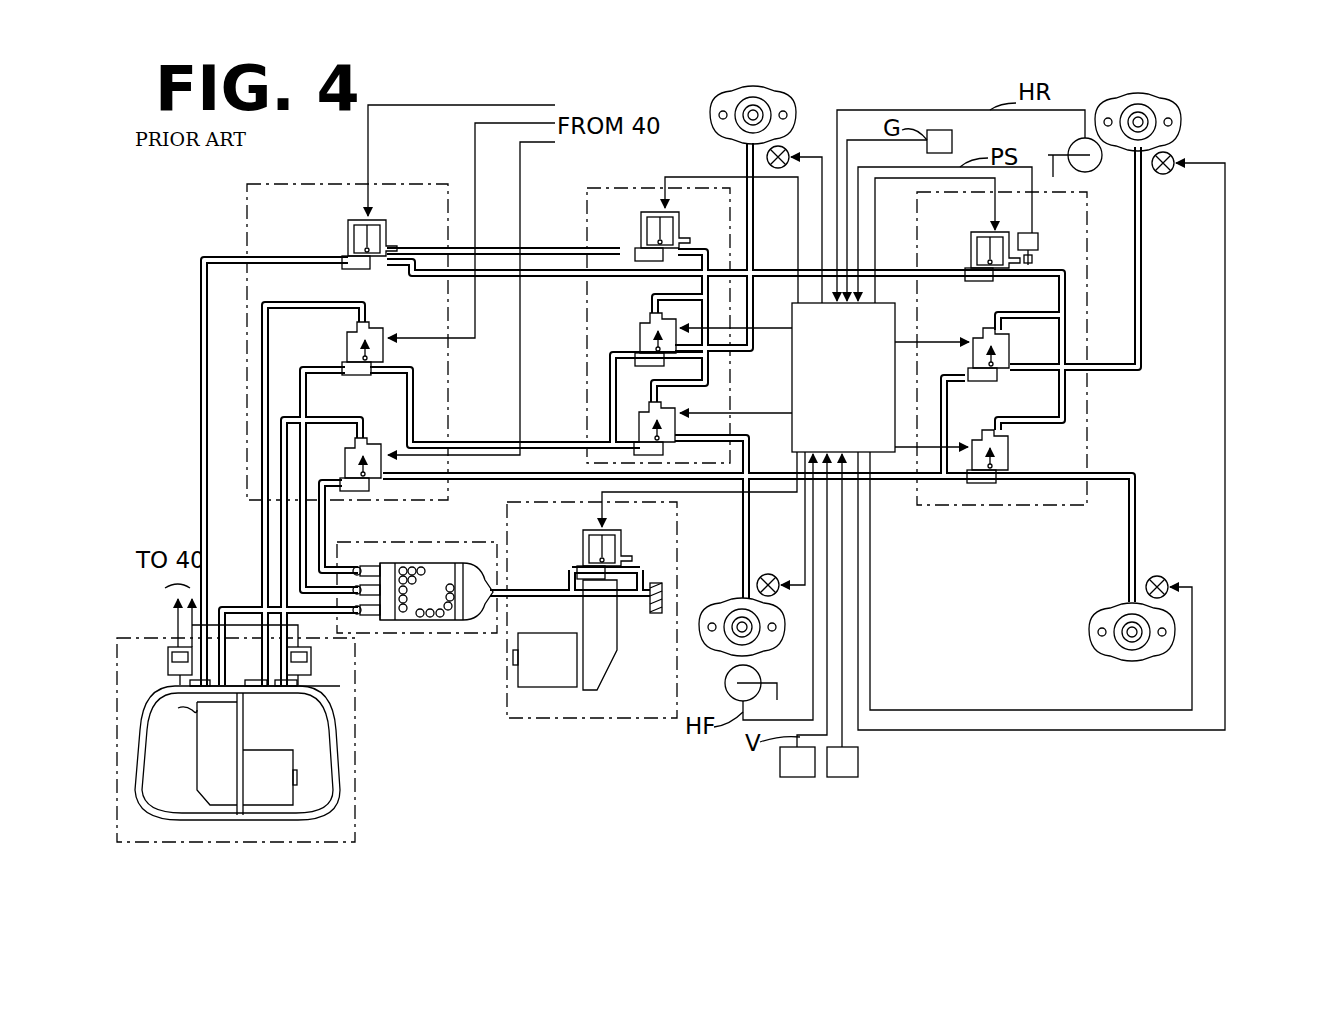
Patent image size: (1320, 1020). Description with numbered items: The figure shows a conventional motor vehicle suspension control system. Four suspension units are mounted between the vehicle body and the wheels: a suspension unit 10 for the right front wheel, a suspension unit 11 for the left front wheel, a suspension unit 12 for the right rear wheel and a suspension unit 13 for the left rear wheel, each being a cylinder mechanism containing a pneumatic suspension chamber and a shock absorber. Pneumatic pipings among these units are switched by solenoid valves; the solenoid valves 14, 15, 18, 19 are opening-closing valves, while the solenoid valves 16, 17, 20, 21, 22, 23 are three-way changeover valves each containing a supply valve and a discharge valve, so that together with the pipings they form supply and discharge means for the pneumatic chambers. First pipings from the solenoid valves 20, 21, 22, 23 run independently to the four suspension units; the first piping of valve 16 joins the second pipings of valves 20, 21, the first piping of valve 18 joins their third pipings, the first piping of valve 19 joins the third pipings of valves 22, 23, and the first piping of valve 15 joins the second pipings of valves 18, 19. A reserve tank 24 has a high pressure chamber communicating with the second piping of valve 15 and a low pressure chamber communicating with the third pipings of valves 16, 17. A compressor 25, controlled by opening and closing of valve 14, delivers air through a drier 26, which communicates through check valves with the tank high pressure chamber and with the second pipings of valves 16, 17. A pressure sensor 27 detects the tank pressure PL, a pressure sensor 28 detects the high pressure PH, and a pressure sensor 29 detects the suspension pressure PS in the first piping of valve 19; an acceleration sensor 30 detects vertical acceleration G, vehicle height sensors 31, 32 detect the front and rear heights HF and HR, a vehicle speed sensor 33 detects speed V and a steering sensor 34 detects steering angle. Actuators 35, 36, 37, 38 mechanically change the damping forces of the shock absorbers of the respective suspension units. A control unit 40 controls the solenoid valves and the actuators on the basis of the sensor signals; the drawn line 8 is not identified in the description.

The signal line 8 is at (858, 692).
The suspension unit 10 is at (785, 100).
The suspension unit 11 is at (710, 612).
The suspension unit 12 is at (1163, 100).
The suspension unit 13 is at (1095, 610).
The solenoid valve 14 is at (621, 548).
The solenoid valve 15 is at (386, 232).
The solenoid valve 16 is at (384, 330).
The solenoid valve 17 is at (380, 442).
The solenoid valve 18 is at (641, 230).
The solenoid valve 19 is at (971, 258).
The solenoid valve 20 is at (640, 328).
The solenoid valve 21 is at (640, 418).
The solenoid valve 22 is at (973, 333).
The solenoid valve 23 is at (974, 445).
The reserve tank 24 is at (250, 820).
The compressor 25 is at (585, 687).
The drier 26 is at (425, 560).
The pressure sensor 27 is at (311, 660).
The pressure sensor 28 is at (168, 660).
The pressure sensor 29 is at (1038, 244).
The acceleration sensor 30 is at (952, 140).
The vehicle height sensor 31 is at (727, 680).
The vehicle height sensor 32 is at (1072, 145).
The vehicle speed sensor 33 is at (797, 778).
The steering sensor 34 is at (843, 778).
The actuator 35 is at (778, 168).
The actuator 36 is at (770, 574).
The actuator 37 is at (1163, 174).
The actuator 38 is at (1160, 576).
The control unit 40 is at (890, 303).